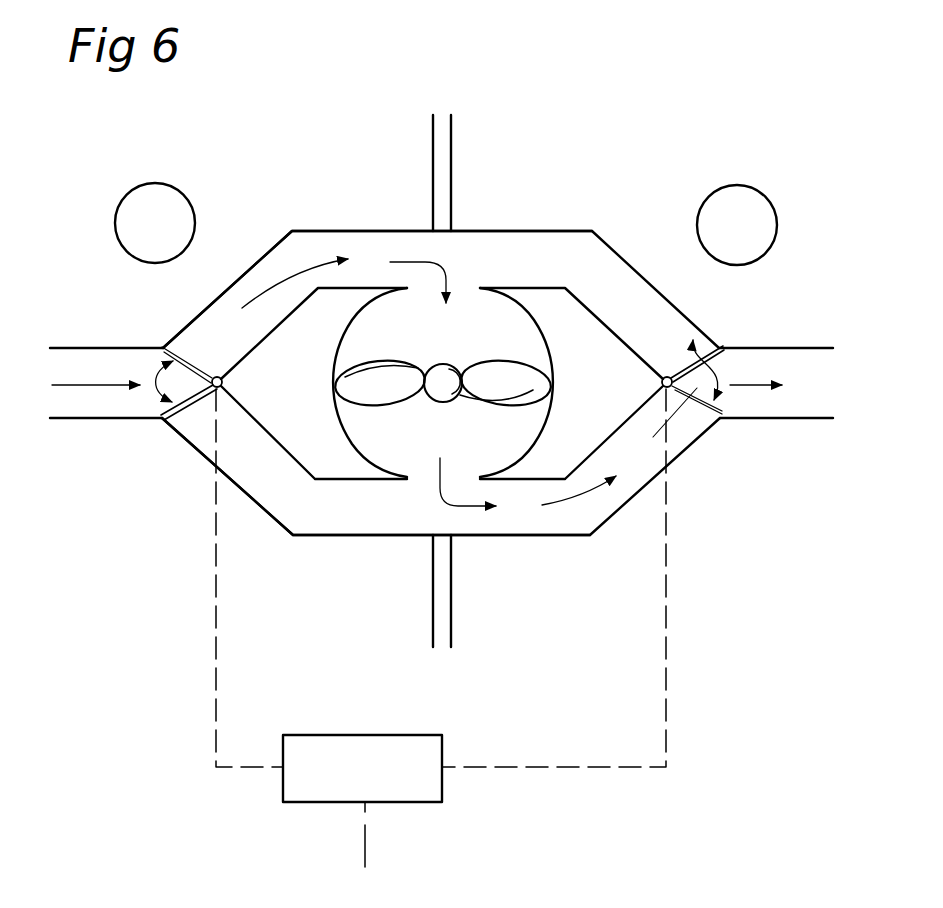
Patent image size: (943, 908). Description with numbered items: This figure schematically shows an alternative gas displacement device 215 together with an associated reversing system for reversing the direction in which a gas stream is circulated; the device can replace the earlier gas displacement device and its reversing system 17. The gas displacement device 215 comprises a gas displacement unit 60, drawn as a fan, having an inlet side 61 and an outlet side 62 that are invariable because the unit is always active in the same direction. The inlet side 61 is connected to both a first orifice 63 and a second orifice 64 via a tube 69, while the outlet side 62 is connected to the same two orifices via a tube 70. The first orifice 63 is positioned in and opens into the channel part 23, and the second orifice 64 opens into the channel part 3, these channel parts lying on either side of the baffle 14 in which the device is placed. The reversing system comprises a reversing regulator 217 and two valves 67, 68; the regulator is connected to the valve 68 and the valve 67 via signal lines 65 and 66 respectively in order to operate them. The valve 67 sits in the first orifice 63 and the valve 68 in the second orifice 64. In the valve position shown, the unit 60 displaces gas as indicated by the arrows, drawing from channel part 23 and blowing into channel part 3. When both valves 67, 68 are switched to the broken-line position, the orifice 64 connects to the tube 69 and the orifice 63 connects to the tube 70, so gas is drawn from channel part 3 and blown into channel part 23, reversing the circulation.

The gas displacement device 215 is at (593, 205).
The baffle 14 is at (443, 134).
The channel part 23 is at (155, 223).
The channel part 3 is at (737, 225).
The tube 69 is at (297, 244).
The tube 70 is at (300, 518).
The inlet side 61 is at (462, 288).
The outlet side 62 is at (457, 479).
The gas displacement unit 60 is at (551, 324).
The first orifice 63 is at (75, 349).
The second orifice 64 is at (783, 408).
The valve 67 is at (193, 410).
The valve 68 is at (692, 350).
The signal line 66 is at (216, 633).
The signal line 65 is at (538, 767).
The reversing regulator 217 is at (362, 768).
The reversing system 17 is at (365, 852).